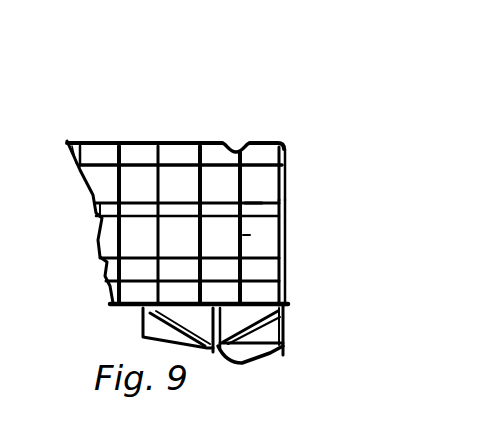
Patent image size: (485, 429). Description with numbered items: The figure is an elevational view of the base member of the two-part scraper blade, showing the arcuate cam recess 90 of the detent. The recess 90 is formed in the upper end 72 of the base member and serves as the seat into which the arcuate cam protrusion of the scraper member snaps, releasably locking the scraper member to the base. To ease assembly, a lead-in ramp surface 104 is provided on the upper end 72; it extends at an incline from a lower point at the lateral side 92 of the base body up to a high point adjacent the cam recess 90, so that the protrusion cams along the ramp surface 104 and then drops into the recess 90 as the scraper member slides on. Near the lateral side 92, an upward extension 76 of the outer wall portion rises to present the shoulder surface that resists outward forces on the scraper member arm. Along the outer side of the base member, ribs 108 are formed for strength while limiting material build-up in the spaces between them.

The upper end 72 is at (148, 140).
The arcuate cam recess 90 is at (243, 150).
The lead-in ramp surface 104 is at (277, 140).
The upward extension 76 is at (290, 152).
The lateral side 92 is at (285, 268).
The ribs 108 is at (262, 203).